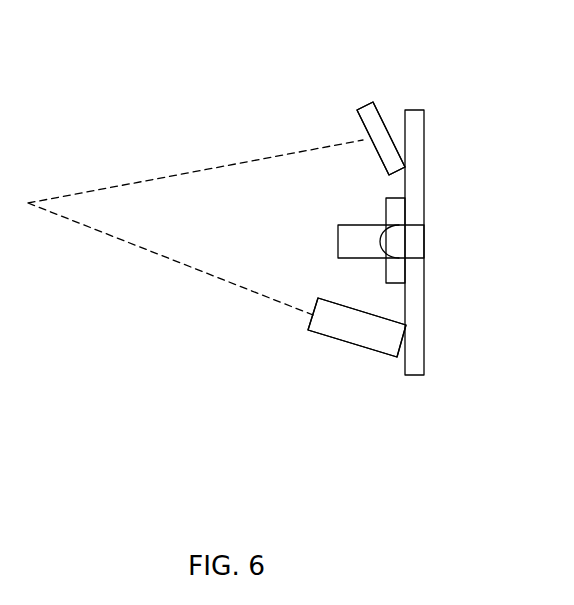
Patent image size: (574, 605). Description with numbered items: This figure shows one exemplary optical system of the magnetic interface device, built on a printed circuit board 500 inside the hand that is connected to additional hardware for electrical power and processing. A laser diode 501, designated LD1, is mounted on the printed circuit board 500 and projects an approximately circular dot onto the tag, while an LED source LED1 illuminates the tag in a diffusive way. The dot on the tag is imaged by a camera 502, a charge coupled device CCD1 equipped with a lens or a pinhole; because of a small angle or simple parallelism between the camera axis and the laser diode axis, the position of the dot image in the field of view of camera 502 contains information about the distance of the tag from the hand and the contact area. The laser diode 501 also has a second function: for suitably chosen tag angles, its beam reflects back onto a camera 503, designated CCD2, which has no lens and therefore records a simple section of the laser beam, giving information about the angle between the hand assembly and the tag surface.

The printed circuit board 500 is at (422, 359).
The laser diode 501 is at (327, 327).
The camera 502 is at (345, 245).
The camera 503 is at (365, 122).
The charge coupled device CCD1 is at (363, 232).
The charge coupled device CCD2 is at (378, 124).
The LED source LED1 is at (418, 240).
The laser diode LD1 is at (382, 337).